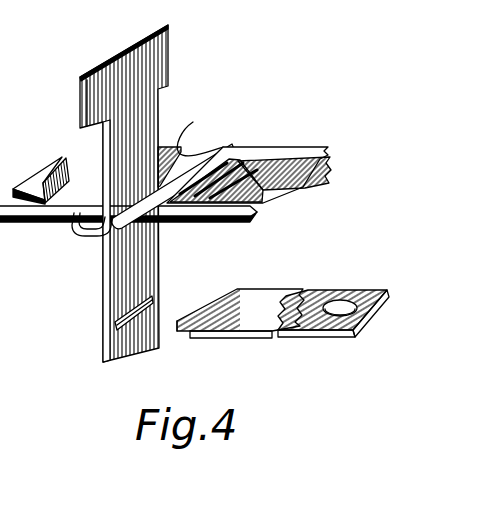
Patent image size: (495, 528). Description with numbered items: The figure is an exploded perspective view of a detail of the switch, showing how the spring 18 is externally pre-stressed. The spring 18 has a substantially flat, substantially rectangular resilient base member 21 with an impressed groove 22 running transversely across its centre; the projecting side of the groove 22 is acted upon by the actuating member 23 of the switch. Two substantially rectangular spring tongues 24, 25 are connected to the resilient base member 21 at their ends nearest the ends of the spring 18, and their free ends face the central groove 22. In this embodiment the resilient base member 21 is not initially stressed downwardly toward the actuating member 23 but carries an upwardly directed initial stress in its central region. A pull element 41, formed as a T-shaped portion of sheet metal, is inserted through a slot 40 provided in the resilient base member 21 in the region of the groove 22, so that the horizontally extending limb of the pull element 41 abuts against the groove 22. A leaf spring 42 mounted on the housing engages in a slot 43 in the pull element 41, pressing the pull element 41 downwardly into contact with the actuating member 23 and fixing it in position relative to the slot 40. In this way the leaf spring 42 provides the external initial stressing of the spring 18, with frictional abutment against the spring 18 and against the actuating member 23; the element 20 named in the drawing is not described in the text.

The spring 18 is at (32, 231).
The contact member 20 is at (12, 84).
The resilient base member 21 is at (232, 150).
The impressed groove 22 is at (88, 232).
The actuating member 23 is at (12, 128).
The spring tongue 24 is at (40, 177).
The spring tongue 25 is at (288, 168).
The slot 40 is at (174, 162).
The pull element 41 is at (142, 193).
The leaf spring 42 is at (323, 290).
The slot 43 is at (132, 309).